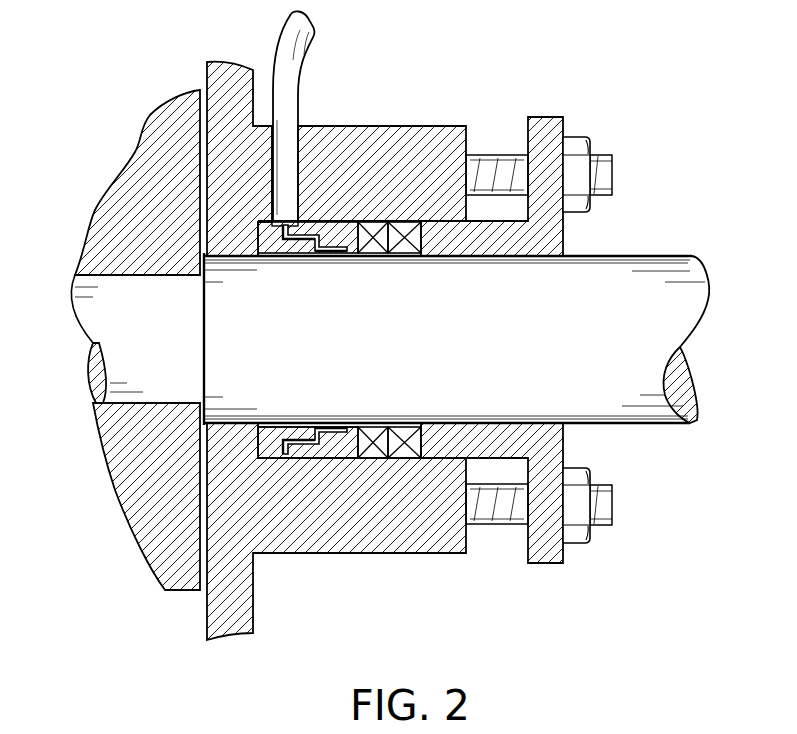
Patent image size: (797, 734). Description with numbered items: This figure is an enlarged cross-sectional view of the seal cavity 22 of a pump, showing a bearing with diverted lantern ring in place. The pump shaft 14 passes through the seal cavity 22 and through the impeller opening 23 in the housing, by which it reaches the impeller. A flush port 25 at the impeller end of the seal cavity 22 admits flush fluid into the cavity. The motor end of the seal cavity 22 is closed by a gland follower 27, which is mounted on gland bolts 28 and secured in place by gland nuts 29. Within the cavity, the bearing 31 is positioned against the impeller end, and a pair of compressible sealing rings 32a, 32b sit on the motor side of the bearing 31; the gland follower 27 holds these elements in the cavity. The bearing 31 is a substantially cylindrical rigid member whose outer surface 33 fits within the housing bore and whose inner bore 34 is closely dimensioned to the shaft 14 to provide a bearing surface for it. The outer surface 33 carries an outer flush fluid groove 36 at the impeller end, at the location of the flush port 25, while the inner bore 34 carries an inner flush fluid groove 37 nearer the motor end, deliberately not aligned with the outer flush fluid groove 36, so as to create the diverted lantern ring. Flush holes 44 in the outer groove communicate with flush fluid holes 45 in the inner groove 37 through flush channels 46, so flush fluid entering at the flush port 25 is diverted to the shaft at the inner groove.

The shaft 14 is at (672, 277).
The seal cavity 22 is at (560, 423).
The impeller opening 23 is at (227, 258).
The flush port 25 is at (290, 59).
The gland follower 27 is at (545, 117).
The gland bolts 28 is at (612, 168).
The gland nuts 29 is at (572, 144).
The bearing 31 is at (345, 235).
The compressible sealing ring 32a is at (380, 256).
The compressible sealing ring 32b is at (420, 256).
The outer surface 33 is at (355, 460).
The inner bore 34 is at (285, 436).
The outer flush fluid groove 36 is at (315, 412).
The inner flush fluid groove 37 is at (347, 256).
The flush holes 44 is at (285, 205).
The flush fluid holes 45 is at (340, 339).
The flush channels 46 is at (313, 256).